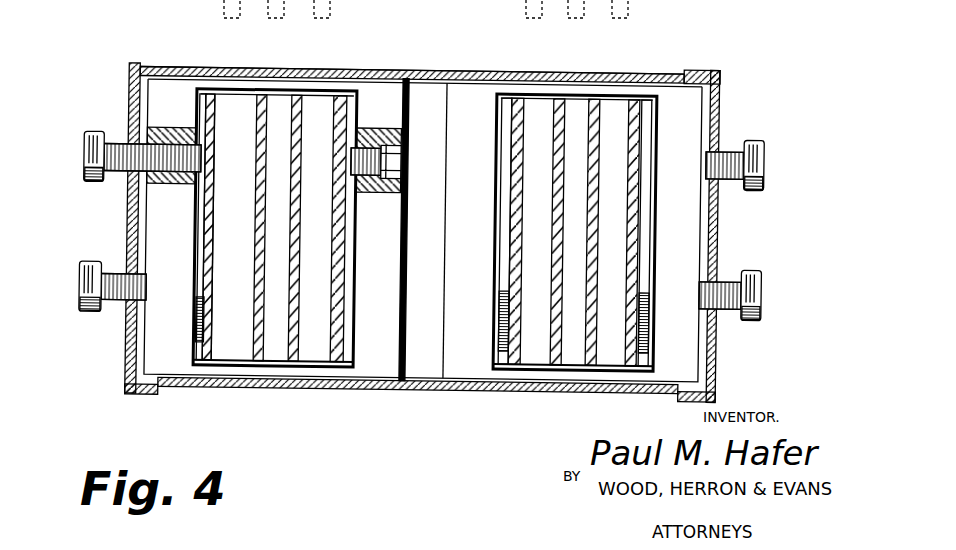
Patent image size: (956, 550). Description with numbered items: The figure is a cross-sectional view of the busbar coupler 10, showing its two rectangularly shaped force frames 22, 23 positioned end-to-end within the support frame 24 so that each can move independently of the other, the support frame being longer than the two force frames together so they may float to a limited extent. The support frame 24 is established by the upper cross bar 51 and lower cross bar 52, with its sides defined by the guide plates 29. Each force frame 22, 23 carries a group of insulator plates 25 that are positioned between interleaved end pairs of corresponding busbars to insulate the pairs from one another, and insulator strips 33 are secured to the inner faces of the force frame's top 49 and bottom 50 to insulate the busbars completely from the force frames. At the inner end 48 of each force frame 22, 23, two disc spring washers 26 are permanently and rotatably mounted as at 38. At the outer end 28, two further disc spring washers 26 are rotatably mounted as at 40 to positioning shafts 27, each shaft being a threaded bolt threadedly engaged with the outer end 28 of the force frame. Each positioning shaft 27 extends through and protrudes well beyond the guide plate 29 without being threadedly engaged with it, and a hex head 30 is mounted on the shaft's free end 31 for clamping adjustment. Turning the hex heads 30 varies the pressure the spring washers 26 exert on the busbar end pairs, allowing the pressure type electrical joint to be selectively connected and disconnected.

The busbar coupler 10 is at (727, 82).
The force frame 22 is at (159, 108).
The force frame 23 is at (672, 115).
The support frame 24 is at (367, 71).
The insulator plates 25 is at (300, 82).
The disc spring washers 26 is at (200, 252).
The positioning shaft 27 is at (229, 227).
The outer end of force frame 28 is at (163, 203).
The guide plate 29 is at (122, 347).
The hex head 30 is at (86, 158).
The free end of shaft 31 is at (116, 140).
The insulator strips 33 is at (250, 86).
The rotatable mounting 38 is at (413, 148).
The rotatable mounting 40 is at (224, 150).
The inner end of force frame 48 is at (462, 226).
The force frame top 49 is at (283, 92).
The force frame bottom 50 is at (240, 366).
The upper cross bar 51 is at (205, 72).
The lower cross bar 52 is at (506, 396).